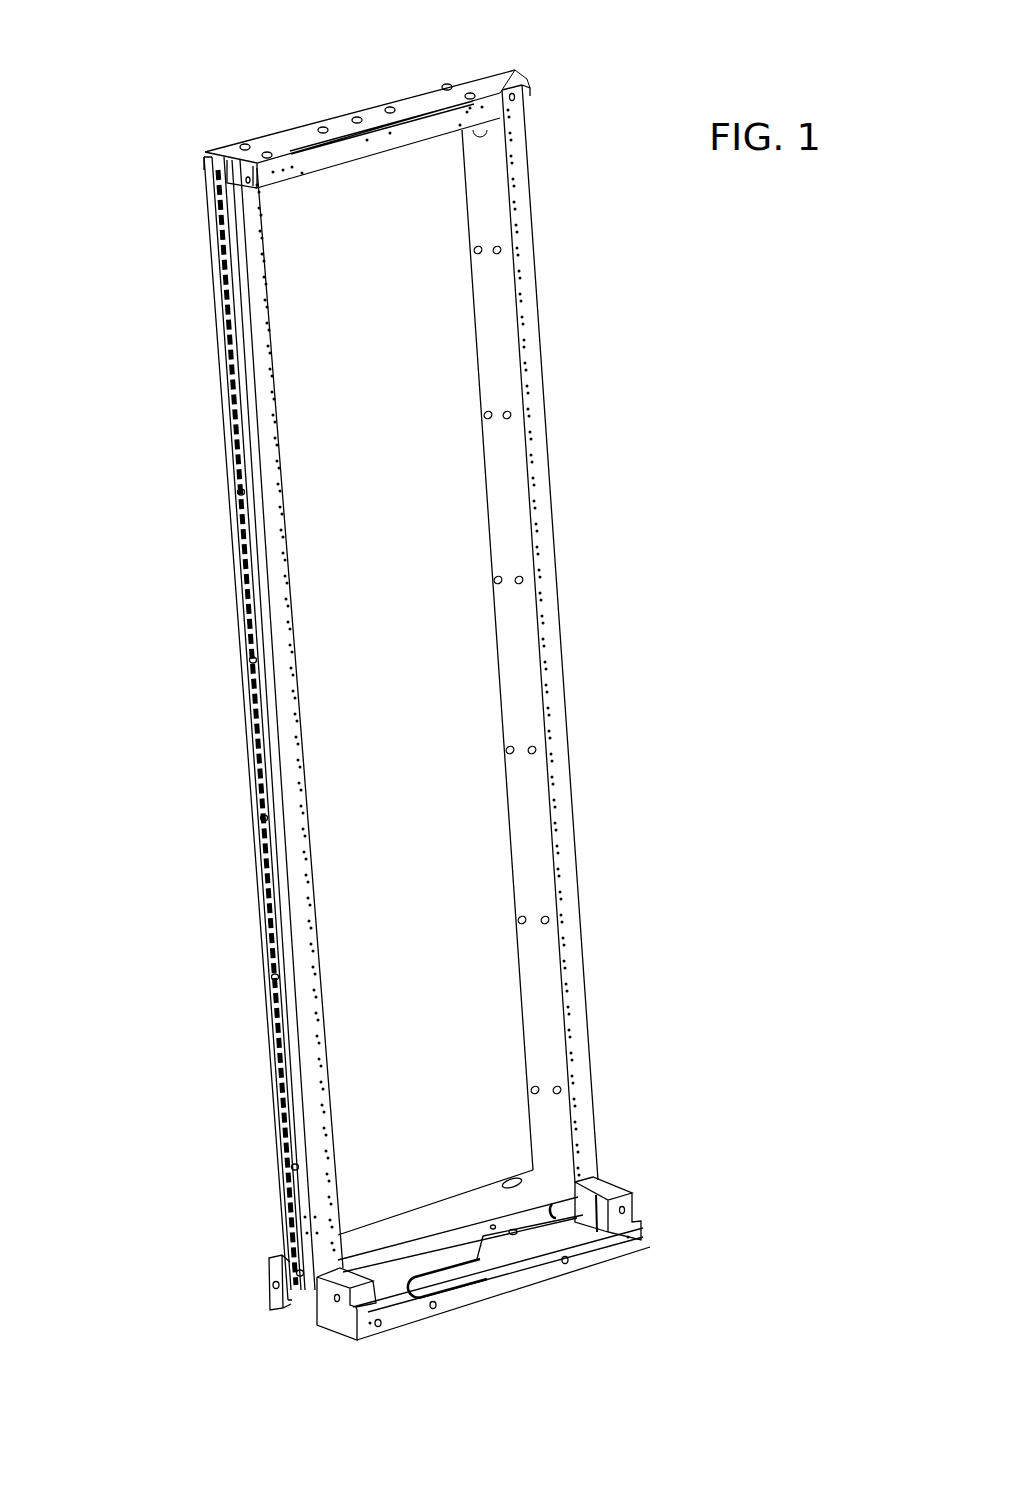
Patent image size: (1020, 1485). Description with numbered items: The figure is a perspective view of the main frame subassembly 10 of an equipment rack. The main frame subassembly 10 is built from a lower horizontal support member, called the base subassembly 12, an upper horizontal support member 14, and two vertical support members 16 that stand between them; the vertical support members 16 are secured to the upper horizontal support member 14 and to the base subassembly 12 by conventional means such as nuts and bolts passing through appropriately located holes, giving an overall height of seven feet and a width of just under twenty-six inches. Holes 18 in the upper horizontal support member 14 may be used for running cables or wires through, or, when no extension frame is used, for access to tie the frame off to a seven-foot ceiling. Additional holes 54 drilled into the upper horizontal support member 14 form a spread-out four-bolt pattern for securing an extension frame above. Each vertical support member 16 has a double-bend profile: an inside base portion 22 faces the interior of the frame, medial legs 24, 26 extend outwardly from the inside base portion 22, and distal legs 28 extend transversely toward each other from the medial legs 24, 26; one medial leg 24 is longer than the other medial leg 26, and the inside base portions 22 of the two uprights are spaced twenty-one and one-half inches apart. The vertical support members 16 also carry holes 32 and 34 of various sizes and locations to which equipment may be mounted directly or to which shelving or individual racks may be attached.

The main frame subassembly 10 is at (618, 342).
The base subassembly 12 is at (607, 1190).
The upper horizontal support member 14 is at (303, 131).
The vertical support members 16 is at (247, 382).
The holes 18 is at (391, 106).
The inside base portion 22 is at (507, 507).
The medial leg 24 is at (552, 633).
The medial leg 26 is at (205, 153).
The distal legs 28 is at (212, 222).
The holes 32 is at (537, 758).
The holes 34 is at (570, 1013).
The holes 54 is at (266, 151).